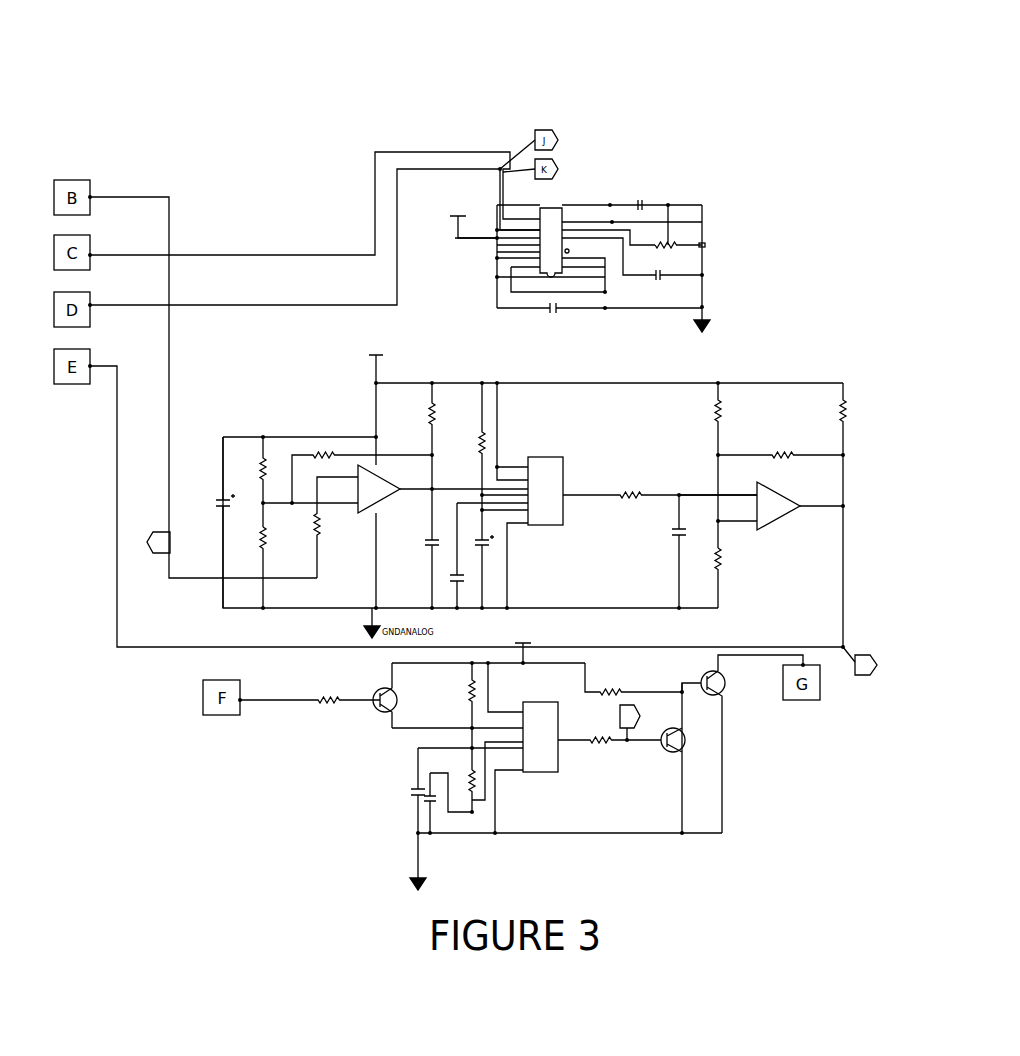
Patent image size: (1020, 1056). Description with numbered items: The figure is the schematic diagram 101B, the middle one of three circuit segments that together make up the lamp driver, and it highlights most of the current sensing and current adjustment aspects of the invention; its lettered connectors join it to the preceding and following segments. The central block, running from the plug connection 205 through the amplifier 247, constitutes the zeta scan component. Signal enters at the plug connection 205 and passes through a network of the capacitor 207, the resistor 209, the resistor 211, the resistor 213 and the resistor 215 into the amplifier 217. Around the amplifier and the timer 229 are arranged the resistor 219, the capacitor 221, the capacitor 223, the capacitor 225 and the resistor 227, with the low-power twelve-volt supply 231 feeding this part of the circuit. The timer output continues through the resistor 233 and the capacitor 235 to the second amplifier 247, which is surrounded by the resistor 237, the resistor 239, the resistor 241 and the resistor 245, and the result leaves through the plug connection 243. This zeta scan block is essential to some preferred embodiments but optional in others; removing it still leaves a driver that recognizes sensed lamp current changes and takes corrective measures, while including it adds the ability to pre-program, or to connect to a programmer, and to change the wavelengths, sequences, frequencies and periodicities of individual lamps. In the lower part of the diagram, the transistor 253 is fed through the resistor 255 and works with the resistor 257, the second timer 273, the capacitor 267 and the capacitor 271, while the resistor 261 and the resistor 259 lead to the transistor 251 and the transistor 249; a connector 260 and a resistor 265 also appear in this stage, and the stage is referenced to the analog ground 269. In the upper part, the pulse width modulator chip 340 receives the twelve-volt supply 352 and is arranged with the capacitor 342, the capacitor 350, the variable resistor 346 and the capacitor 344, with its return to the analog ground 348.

The schematic diagram 101B is at (470, 127).
The plug 205 is at (155, 530).
The capacitor 207 is at (218, 497).
The resistor 209 is at (258, 552).
The resistor 211 is at (258, 452).
The resistor 213 is at (320, 537).
The resistor 215 is at (308, 447).
The amplifier 217 is at (368, 512).
The resistor 219 is at (437, 400).
The capacitor 221 is at (428, 555).
The capacitor 223 is at (466, 590).
The capacitor 225 is at (490, 553).
The resistor 227 is at (486, 414).
The timer 229 is at (550, 462).
The power-low 231 is at (370, 380).
The resistor 233 is at (645, 493).
The capacitor 235 is at (672, 552).
The resistor 237 is at (712, 426).
The resistor 239 is at (730, 573).
The resistor 241 is at (778, 442).
The plug 243 is at (851, 649).
The resistor 245 is at (858, 400).
The amplifier 247 is at (782, 523).
The transistor 249 is at (725, 690).
The transistor 251 is at (688, 746).
The transistor 253 is at (375, 711).
The resistor 255 is at (312, 698).
The resistor 257 is at (465, 691).
The resistor 259 is at (622, 690).
The connector J 260 is at (636, 727).
The resistor 261 is at (617, 746).
The resistor R43 265 is at (480, 786).
The capacitor 267 is at (437, 805).
The ground analog 269 is at (414, 878).
The capacitor 271 is at (405, 798).
The timer 273 is at (538, 767).
The pulse width modulator chip 340 is at (558, 208).
The capacitor 342 is at (567, 313).
The capacitor 344 is at (672, 268).
The variable resistor 346 is at (683, 240).
The ground analog 348 is at (712, 323).
The capacitor 350 is at (658, 204).
The 12 volt 352 is at (455, 228).